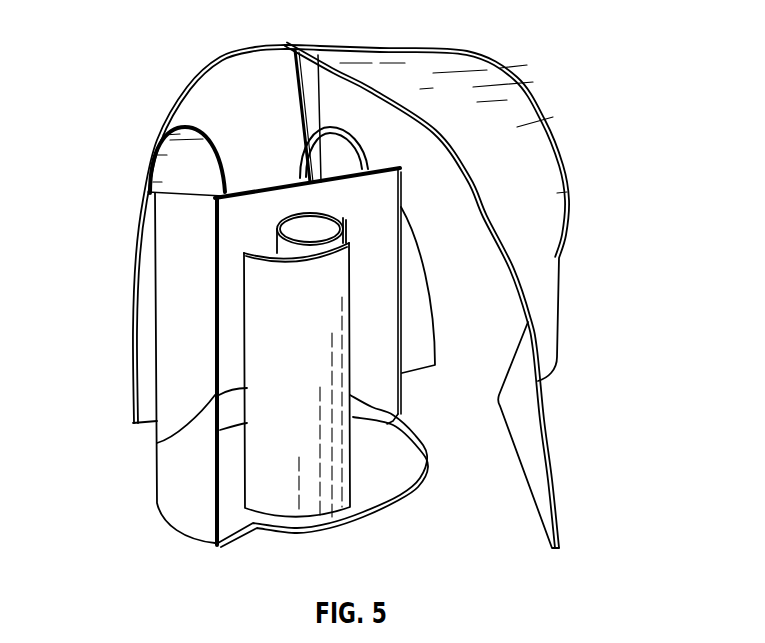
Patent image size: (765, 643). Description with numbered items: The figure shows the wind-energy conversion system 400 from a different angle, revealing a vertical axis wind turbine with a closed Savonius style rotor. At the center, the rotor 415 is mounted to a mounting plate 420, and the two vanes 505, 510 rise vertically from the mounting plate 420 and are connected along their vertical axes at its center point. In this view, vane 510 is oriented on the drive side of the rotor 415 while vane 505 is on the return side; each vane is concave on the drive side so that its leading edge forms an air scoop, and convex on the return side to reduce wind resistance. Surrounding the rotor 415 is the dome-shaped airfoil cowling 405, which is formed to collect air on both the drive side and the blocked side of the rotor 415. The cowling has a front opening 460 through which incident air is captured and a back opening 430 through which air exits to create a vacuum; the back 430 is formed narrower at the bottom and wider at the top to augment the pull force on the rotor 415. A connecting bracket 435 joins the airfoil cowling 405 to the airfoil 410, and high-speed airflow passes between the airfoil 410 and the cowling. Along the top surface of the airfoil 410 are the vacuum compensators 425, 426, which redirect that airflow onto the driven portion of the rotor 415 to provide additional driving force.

The system 400 is at (127, 43).
The airfoil cowling 405 is at (547, 160).
The airfoil 410 is at (173, 483).
The rotor 415 is at (312, 497).
The mounting plate 420 is at (393, 445).
The vacuum compensator 425 is at (213, 172).
The vacuum compensator 426 is at (332, 158).
The back opening 430 is at (497, 308).
The connecting bracket 435 is at (313, 78).
The front opening 460 is at (507, 493).
The vane 505 is at (317, 215).
The vane 510 is at (157, 443).